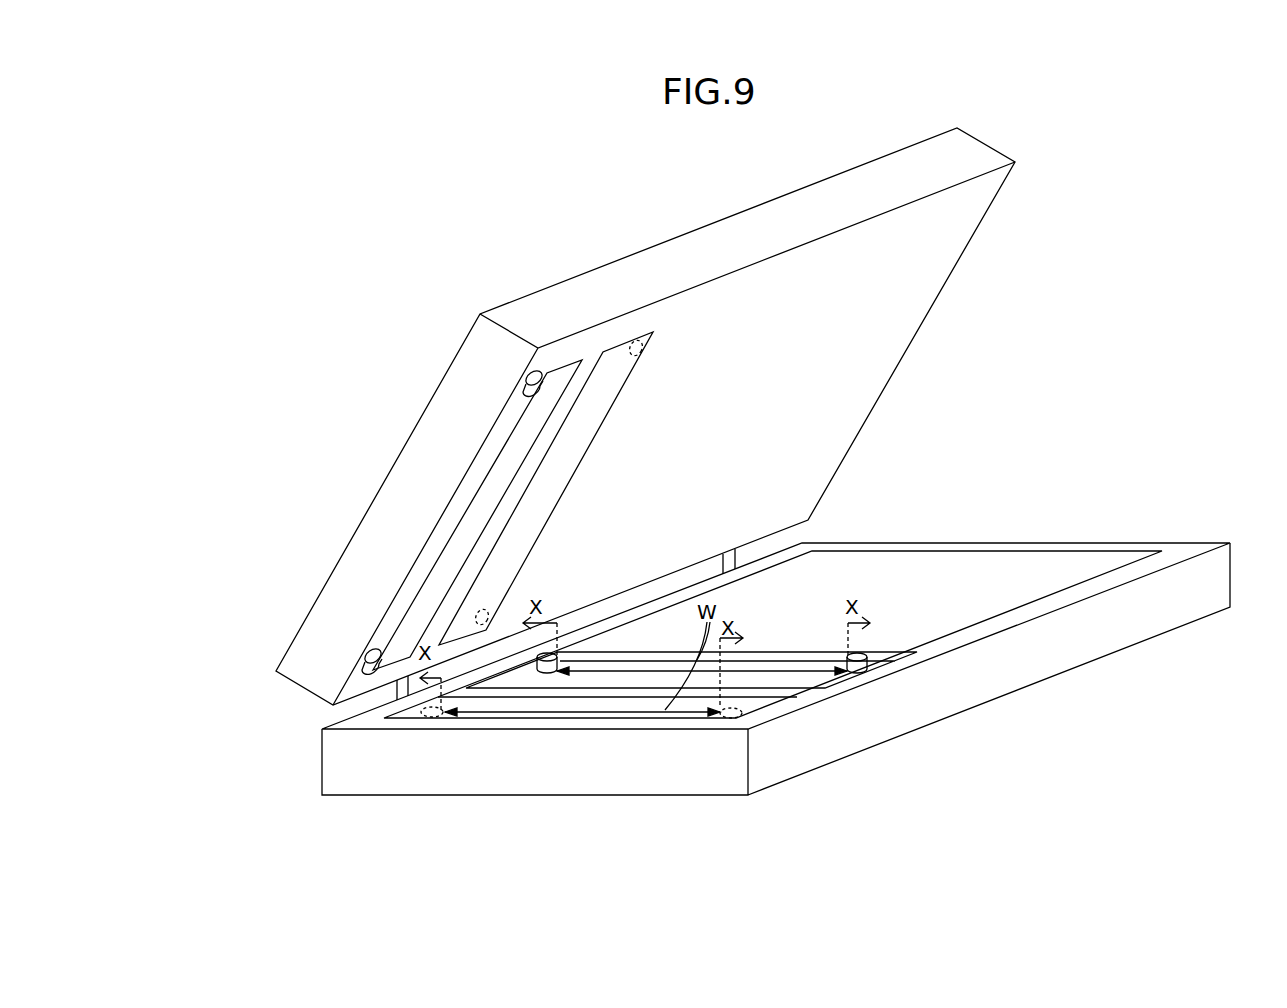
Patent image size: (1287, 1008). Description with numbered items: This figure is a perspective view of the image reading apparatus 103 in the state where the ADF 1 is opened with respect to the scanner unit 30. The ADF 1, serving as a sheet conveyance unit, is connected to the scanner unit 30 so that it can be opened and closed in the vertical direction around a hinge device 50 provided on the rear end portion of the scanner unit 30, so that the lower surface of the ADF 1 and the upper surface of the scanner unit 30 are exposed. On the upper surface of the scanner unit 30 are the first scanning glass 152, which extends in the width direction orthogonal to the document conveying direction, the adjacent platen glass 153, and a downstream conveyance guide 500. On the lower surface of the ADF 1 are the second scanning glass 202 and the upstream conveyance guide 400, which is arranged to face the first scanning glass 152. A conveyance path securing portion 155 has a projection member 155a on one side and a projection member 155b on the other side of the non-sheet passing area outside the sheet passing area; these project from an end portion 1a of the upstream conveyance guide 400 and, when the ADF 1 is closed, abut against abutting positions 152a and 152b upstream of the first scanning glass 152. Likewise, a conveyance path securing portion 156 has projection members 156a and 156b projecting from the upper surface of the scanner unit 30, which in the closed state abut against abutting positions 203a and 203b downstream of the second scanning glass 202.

The ADF 1 is at (948, 292).
The end portion of the upstream conveyance guide 1a is at (457, 512).
The scanner unit 30 is at (1008, 535).
The hinge device 50 is at (397, 687).
The image reading apparatus 103 is at (1110, 298).
The first scanning glass 152 is at (492, 705).
The abutting position 152a is at (720, 720).
The abutting position 152b is at (427, 718).
The platen glass 153 is at (1107, 555).
The conveyance path securing portion 155 is at (365, 490).
The projection member 155a is at (523, 373).
The projection member 155b is at (372, 653).
The conveyance path securing portion 156 is at (739, 709).
The projection member 156a is at (855, 671).
The projection member 156b is at (542, 669).
The second scanning glass 202 is at (602, 392).
The abutting position 203a is at (642, 350).
The abutting position 203b is at (485, 611).
The upstream conveyance guide 400 is at (563, 377).
The downstream conveyance guide 500 is at (833, 680).